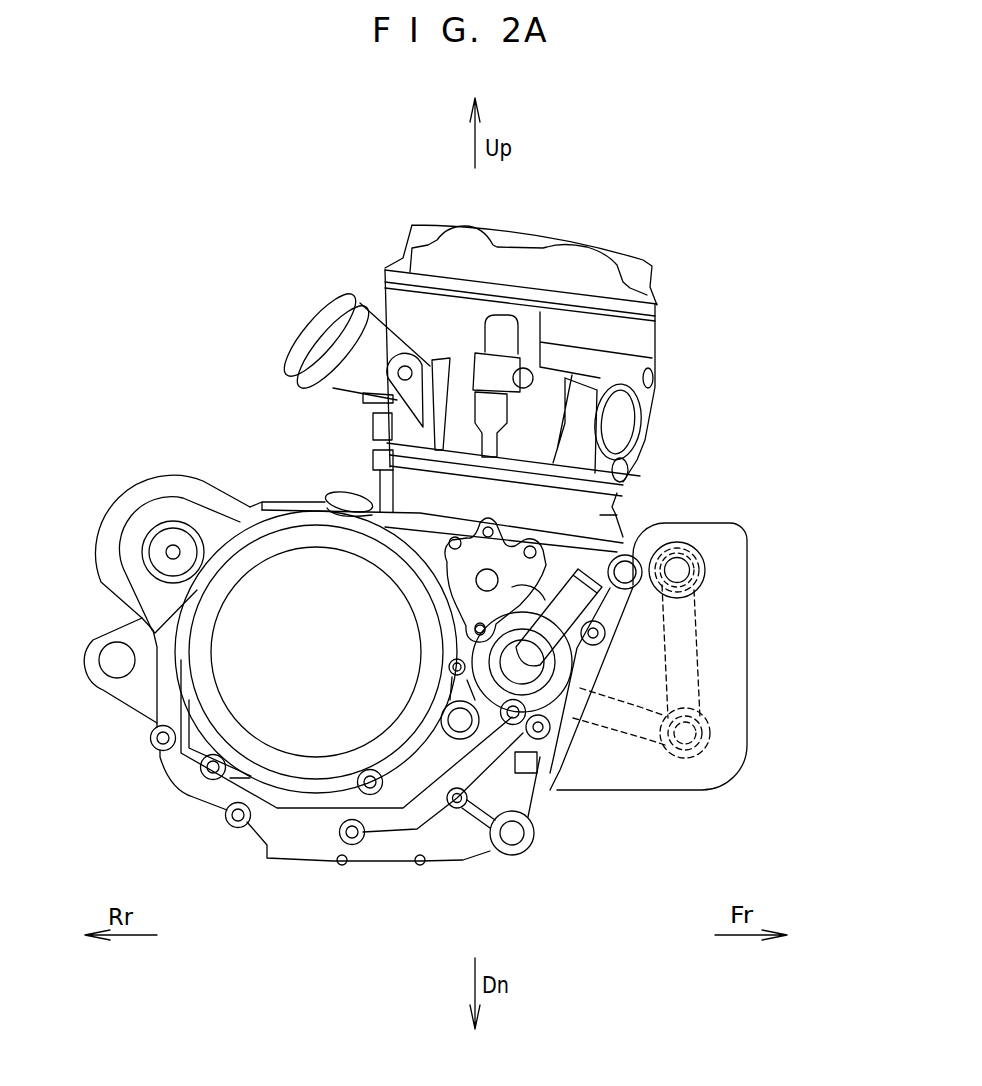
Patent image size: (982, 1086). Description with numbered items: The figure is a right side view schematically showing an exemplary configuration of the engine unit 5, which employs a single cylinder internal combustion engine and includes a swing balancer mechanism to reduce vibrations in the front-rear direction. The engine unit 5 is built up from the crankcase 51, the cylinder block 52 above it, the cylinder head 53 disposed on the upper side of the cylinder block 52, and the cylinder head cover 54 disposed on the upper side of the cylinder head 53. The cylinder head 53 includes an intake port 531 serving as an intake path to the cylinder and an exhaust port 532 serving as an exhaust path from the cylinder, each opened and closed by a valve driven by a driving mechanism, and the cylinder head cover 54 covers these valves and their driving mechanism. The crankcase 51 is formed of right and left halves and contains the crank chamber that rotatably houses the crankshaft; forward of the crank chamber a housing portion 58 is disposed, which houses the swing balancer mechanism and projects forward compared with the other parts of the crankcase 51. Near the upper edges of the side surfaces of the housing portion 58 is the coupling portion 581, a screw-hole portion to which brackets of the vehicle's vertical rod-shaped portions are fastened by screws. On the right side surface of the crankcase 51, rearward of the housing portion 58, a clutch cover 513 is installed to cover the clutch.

The engine unit 5 is at (692, 189).
The crankcase 51 is at (388, 852).
The clutch cover 513 is at (263, 708).
The cylinder block 52 is at (600, 515).
The cylinder head 53 is at (563, 420).
The intake port 531 is at (322, 332).
The exhaust port 532 is at (623, 427).
The cylinder head cover 54 is at (547, 264).
The housing portion 58 is at (748, 633).
The coupling portion 581 is at (681, 568).